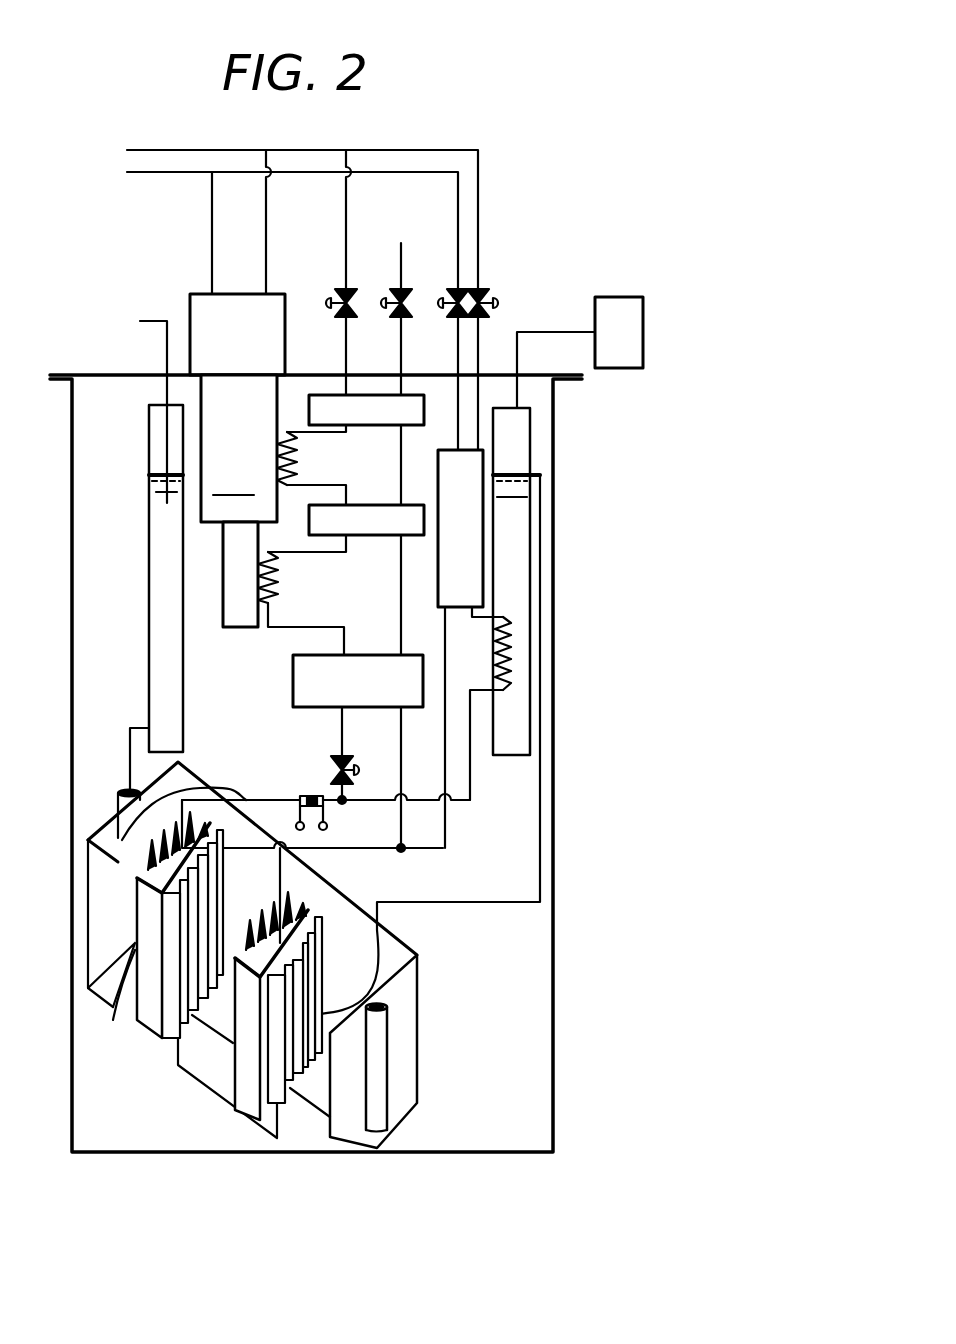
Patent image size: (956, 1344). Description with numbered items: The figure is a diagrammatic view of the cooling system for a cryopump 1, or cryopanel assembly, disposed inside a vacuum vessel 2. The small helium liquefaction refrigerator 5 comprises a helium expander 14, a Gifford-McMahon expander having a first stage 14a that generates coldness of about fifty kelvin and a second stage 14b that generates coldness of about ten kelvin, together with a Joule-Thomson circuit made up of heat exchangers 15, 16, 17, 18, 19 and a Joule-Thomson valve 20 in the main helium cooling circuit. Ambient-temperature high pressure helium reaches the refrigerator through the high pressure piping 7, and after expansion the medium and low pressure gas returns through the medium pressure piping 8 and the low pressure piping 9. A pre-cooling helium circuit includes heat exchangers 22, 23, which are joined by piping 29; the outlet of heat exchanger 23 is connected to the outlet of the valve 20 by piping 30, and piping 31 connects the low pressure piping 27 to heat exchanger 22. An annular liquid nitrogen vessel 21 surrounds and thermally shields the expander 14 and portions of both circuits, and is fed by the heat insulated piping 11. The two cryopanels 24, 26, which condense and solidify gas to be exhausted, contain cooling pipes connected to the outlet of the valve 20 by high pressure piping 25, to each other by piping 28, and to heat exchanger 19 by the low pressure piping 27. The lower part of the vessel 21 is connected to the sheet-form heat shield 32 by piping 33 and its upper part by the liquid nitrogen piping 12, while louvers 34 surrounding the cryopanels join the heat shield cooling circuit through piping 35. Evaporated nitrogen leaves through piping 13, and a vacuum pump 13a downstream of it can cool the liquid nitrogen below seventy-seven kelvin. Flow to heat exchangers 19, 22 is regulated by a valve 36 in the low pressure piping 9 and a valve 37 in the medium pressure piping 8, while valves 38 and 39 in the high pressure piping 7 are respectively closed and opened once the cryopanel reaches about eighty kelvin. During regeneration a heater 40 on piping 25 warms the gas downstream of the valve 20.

The cryopump 1 is at (417, 1027).
The vacuum vessel 2 is at (553, 1022).
The small helium liquefaction refrigerator 5 is at (180, 291).
The high pressure piping 7 is at (266, 205).
The medium pressure piping 8 is at (212, 230).
The low pressure piping 9 is at (401, 243).
The heat insulated piping 11 is at (167, 340).
The liquid nitrogen piping 12 is at (462, 903).
The piping 13 is at (548, 332).
The vacuum pump 13a is at (636, 306).
The helium expander 14 is at (205, 310).
The first stage 14a is at (239, 448).
The second stage 14b is at (223, 608).
The heat exchanger 15 is at (368, 425).
The heat exchanger 16 is at (297, 458).
The heat exchanger 17 is at (360, 535).
The heat exchanger 18 is at (278, 576).
The heat exchanger 19 is at (375, 655).
The Joule-Thomson valve 20 is at (348, 777).
The liquid nitrogen vessel 21 is at (532, 433).
The heat exchanger 22 is at (470, 528).
The heat exchanger 23 is at (513, 647).
The cryopanel 24 is at (118, 850).
The high pressure piping 25 is at (242, 797).
The cryopanel 26 is at (298, 907).
The low pressure piping 27 is at (401, 733).
The piping 28 is at (200, 1080).
The piping 29 is at (500, 618).
The piping 30 is at (470, 783).
The piping 31 is at (447, 743).
The heat shield 32 is at (405, 1073).
The piping 33 is at (130, 750).
The louvers 34 is at (143, 918).
The piping 35 is at (180, 1027).
The valve 36 is at (387, 300).
The valve 37 is at (440, 300).
The valve 38 is at (500, 300).
The valve 39 is at (328, 300).
The heater 40 is at (313, 796).